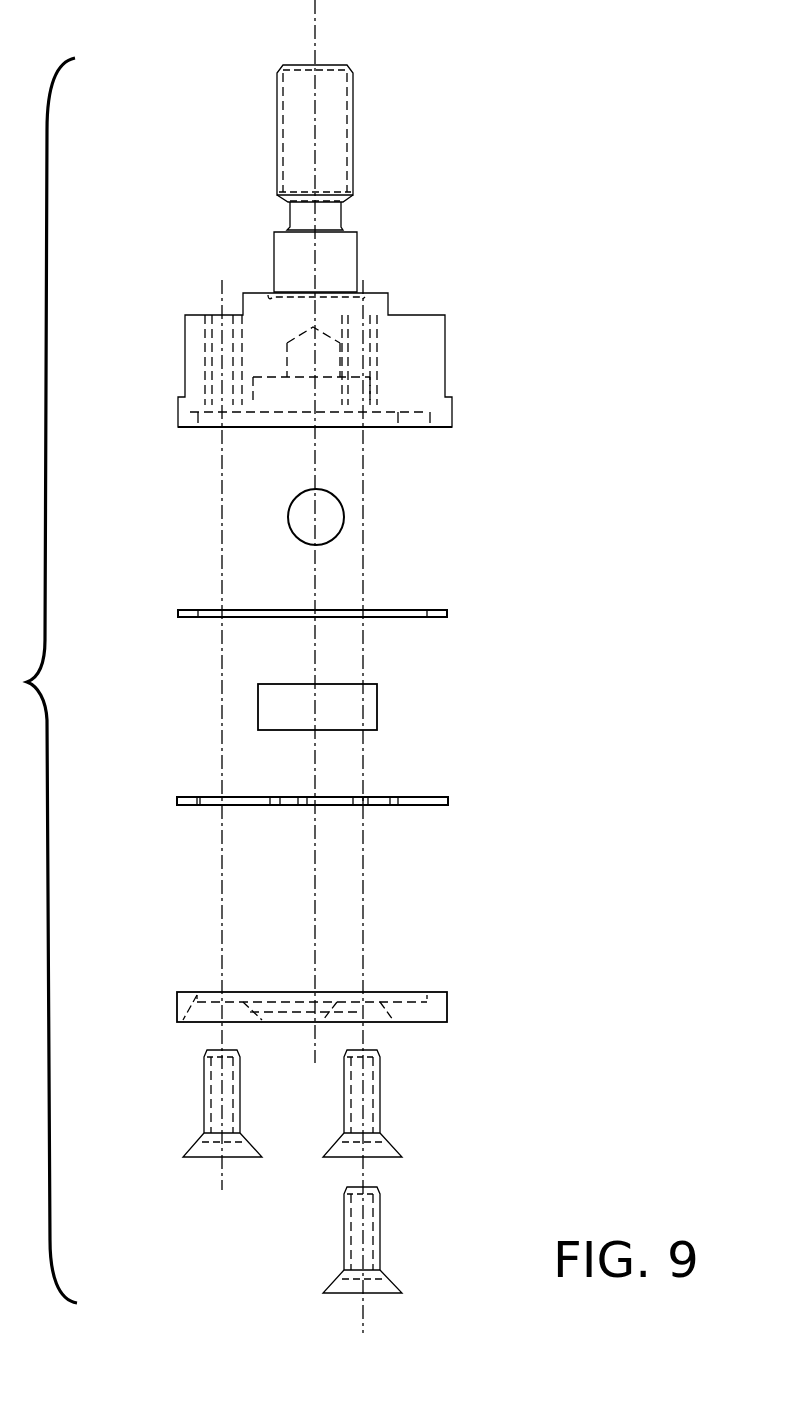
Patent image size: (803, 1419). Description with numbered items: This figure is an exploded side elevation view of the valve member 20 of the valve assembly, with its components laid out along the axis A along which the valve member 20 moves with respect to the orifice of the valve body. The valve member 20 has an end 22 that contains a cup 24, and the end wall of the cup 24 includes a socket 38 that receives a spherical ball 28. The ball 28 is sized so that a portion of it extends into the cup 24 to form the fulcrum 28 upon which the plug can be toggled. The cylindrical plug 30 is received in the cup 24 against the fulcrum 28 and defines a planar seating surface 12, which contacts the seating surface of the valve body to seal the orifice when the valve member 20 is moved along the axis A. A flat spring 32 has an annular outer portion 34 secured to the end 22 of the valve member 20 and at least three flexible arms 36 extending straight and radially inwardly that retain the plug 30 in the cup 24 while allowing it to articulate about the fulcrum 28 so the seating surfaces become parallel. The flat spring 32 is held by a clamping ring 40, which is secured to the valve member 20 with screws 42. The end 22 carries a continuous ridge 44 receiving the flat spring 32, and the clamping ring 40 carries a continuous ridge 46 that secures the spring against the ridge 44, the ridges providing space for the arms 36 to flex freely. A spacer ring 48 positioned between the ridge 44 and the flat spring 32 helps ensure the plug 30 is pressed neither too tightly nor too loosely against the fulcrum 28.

The axis A is at (315, 20).
The valve member 20 is at (265, 162).
The end of the valve member 22 is at (398, 432).
The continuous ridge of the valve member 44 is at (443, 427).
The cup 24 is at (380, 393).
The socket 38 is at (353, 355).
The fulcrum (spherical ball) 28 is at (275, 510).
The spacer ring 48 is at (163, 612).
The plug 30 is at (284, 720).
The seating surface 12 is at (350, 730).
The flat spring 32 is at (265, 806).
The outer portion of the flat spring 34 is at (188, 807).
The flexible arms 36 is at (278, 807).
The clamping ring 40 is at (286, 986).
The continuous ridge of the clamping ring 46 is at (438, 992).
The screws 42 is at (191, 1098).